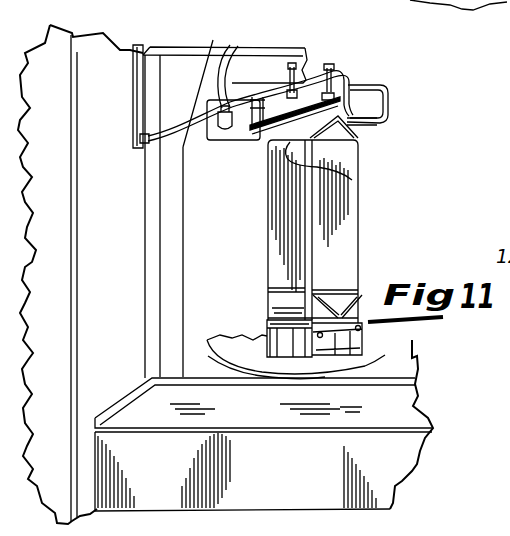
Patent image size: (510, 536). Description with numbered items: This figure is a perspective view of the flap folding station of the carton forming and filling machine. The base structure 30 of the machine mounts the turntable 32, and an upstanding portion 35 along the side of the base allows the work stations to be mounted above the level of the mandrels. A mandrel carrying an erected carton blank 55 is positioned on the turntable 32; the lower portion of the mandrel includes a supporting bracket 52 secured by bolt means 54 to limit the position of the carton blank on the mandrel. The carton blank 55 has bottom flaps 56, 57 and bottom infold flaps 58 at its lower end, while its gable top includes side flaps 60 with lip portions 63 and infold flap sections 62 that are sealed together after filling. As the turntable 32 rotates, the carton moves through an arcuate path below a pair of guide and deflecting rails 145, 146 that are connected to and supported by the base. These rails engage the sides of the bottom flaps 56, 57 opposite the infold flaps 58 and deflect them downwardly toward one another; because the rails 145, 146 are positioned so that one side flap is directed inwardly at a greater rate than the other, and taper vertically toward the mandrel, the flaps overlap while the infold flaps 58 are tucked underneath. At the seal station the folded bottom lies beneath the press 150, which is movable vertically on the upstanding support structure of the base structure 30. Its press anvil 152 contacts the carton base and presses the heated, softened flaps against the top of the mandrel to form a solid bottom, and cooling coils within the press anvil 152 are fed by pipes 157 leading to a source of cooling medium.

The base structure 30 is at (412, 471).
The turntable 32 is at (417, 372).
The upstanding portion 35 is at (110, 249).
The supporting bracket 52 is at (365, 330).
The bolt means 54 is at (347, 332).
The carton blank 55 is at (363, 212).
The bottom flap 56 is at (357, 130).
The bottom flap 57 is at (352, 180).
The bottom infold flap 58 is at (333, 146).
The side flap 60 is at (277, 298).
The infold flap section 62 is at (355, 297).
The lip portion 63 is at (267, 320).
The guide and deflecting rail 145 is at (388, 97).
The guide and deflecting rail 146 is at (348, 72).
The press 150 is at (240, 166).
The press anvil 152 is at (245, 132).
The pipes 157 is at (216, 50).